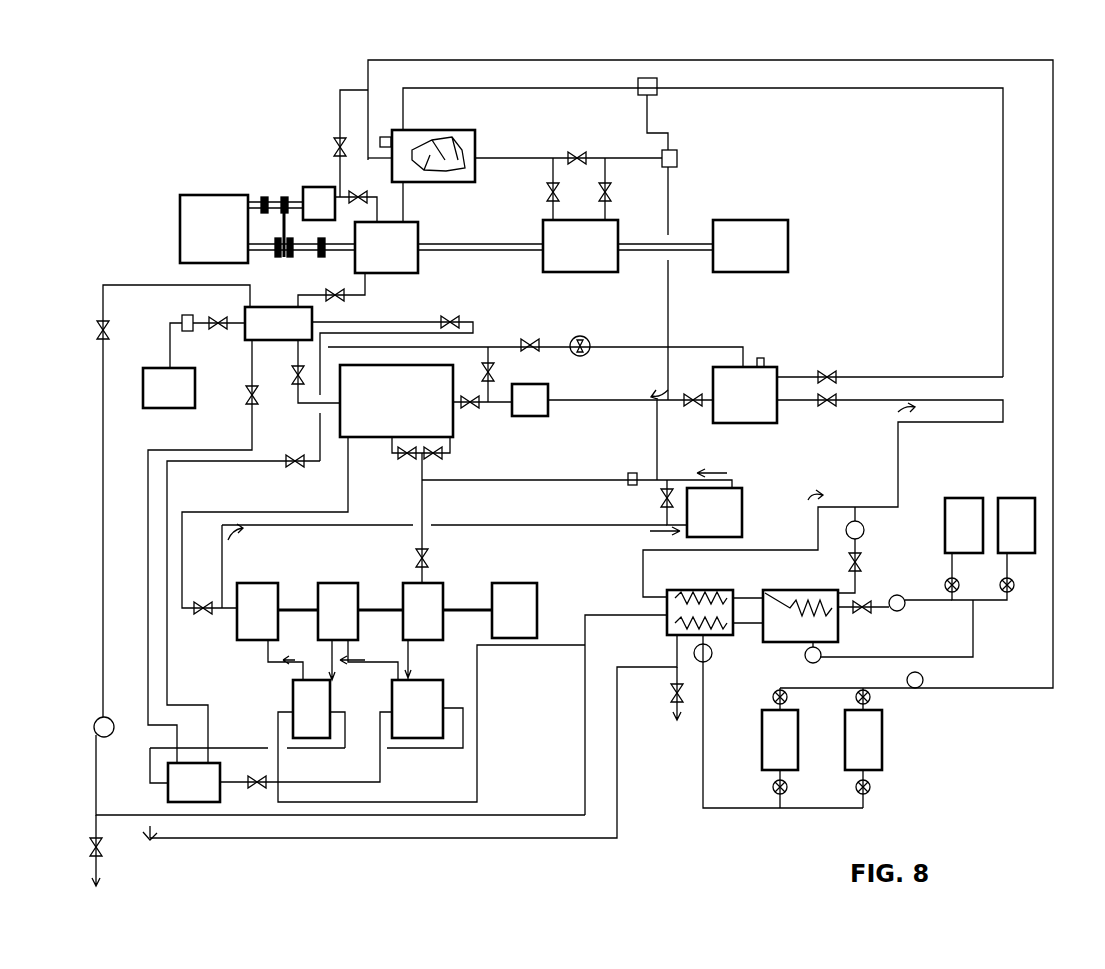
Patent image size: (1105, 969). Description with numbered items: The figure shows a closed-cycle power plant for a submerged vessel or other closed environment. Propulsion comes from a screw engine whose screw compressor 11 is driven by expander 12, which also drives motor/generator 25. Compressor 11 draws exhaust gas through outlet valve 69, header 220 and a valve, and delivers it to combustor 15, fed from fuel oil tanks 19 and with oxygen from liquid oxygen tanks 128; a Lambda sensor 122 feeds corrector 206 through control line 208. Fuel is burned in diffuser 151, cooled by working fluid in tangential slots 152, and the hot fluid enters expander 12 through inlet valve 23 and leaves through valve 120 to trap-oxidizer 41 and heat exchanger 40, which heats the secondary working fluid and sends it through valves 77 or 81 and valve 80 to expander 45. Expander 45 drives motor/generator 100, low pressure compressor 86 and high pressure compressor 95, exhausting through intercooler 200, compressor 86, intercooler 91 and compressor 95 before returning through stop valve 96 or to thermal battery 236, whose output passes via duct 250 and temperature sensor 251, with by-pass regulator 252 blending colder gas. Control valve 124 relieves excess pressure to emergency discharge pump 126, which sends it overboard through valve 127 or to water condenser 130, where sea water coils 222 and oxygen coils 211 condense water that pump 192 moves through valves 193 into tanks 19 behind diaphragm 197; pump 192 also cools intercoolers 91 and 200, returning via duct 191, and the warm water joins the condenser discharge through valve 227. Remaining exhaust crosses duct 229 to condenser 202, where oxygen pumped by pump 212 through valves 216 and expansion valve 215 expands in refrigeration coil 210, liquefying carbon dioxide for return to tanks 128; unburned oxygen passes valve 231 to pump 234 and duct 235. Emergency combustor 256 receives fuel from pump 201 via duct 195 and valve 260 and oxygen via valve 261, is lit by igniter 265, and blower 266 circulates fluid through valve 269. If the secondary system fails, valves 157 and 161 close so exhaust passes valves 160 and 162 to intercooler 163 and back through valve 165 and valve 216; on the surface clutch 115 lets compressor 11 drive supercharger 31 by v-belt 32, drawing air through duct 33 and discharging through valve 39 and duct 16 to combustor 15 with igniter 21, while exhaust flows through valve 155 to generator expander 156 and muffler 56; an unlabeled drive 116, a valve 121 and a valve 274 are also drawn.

The screw compressor 11 is at (400, 259).
The expander 12 is at (595, 258).
The combustor 15 is at (475, 158).
The duct 16 is at (403, 210).
The fuel oil tanks 19 is at (850, 735).
The igniter 21 is at (384, 137).
The inlet valve 23 is at (548, 196).
The motor/generator 25 is at (766, 258).
The supercharger 31 is at (303, 190).
The adjustable v-belt 32 is at (283, 252).
The duct 33 is at (327, 185).
The valve 39 is at (365, 187).
The heat exchanger 40 is at (400, 415).
The trap-oxidizer 41 is at (543, 412).
The expander 45 is at (439, 626).
The muffler 56 is at (184, 401).
The outlet valve 69 is at (296, 385).
The valve 77 is at (404, 459).
The valve 80 is at (432, 558).
The valve 81 is at (437, 457).
The low pressure compressor 86 is at (354, 626).
The intercooler 91 is at (326, 722).
The high pressure compressor 95 is at (272, 626).
The stop valve 96 is at (202, 618).
The motor/generator 100 is at (534, 626).
The clutch 115 is at (321, 257).
The starter motor 116 is at (235, 243).
The valve 120 is at (609, 192).
The valve 121 is at (572, 155).
The Lambda sensor 122 is at (677, 162).
The control valve 124 is at (97, 333).
The emergency discharge pump 126 is at (95, 722).
The valve 127 is at (101, 850).
The liquid oxygen tanks 128 is at (986, 512).
The water condenser 130 is at (685, 590).
The diffuser 151 is at (462, 170).
The tangential slots 152 is at (455, 110).
The valve 155 is at (218, 331).
The generator expander 156 is at (182, 320).
The valve 157 is at (470, 410).
The valve 160 is at (494, 374).
The valve 161 is at (450, 314).
The valve 162 is at (296, 469).
The working fluid intercooler 163 is at (216, 796).
The valve 165 is at (246, 400).
The duct 191 is at (532, 840).
The pump 192 is at (711, 660).
The valves 193 is at (856, 790).
The duct 195 is at (1035, 690).
The diaphragm 197 is at (735, 736).
The first stage intercooler 200 is at (440, 722).
The pump 201 is at (920, 688).
The condenser 202 is at (796, 590).
The corrector 206 is at (657, 95).
The control line 208 is at (647, 133).
The refrigeration coil 210 is at (800, 616).
The coils 211 is at (667, 595).
The pump 212 is at (905, 607).
The expansion valve 215 is at (863, 615).
The valves 216 is at (340, 299).
The exhaust header 220 is at (302, 336).
The coils 222 is at (667, 617).
The valve 227 is at (676, 690).
The crossover duct 229 is at (746, 596).
The valve 231 is at (862, 563).
The pump 234 is at (864, 530).
The duct 235 is at (1003, 172).
The thermal battery 236 is at (738, 525).
The duct 250 is at (630, 410).
The temperature sensor 251 is at (628, 474).
The fluid by-pass regulator 252 is at (660, 499).
The emergency combustor 256 is at (773, 370).
The valve 260 is at (833, 408).
The valve 261 is at (836, 373).
The igniter 265 is at (764, 360).
The blower 266 is at (588, 338).
The valve 269 is at (693, 410).
The valve 274 is at (340, 138).